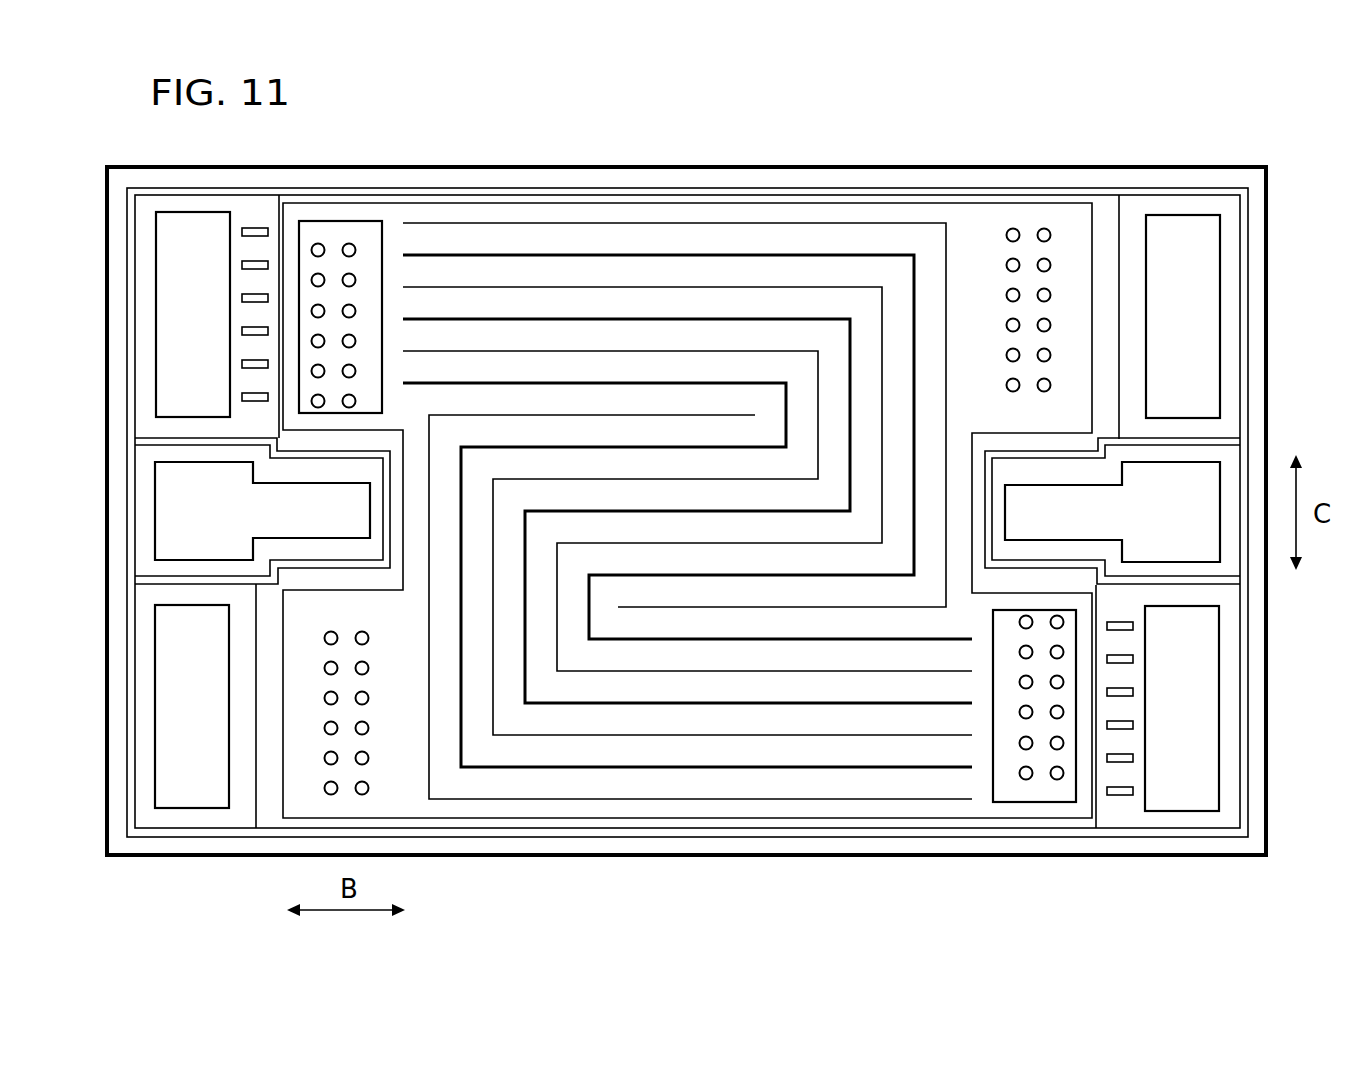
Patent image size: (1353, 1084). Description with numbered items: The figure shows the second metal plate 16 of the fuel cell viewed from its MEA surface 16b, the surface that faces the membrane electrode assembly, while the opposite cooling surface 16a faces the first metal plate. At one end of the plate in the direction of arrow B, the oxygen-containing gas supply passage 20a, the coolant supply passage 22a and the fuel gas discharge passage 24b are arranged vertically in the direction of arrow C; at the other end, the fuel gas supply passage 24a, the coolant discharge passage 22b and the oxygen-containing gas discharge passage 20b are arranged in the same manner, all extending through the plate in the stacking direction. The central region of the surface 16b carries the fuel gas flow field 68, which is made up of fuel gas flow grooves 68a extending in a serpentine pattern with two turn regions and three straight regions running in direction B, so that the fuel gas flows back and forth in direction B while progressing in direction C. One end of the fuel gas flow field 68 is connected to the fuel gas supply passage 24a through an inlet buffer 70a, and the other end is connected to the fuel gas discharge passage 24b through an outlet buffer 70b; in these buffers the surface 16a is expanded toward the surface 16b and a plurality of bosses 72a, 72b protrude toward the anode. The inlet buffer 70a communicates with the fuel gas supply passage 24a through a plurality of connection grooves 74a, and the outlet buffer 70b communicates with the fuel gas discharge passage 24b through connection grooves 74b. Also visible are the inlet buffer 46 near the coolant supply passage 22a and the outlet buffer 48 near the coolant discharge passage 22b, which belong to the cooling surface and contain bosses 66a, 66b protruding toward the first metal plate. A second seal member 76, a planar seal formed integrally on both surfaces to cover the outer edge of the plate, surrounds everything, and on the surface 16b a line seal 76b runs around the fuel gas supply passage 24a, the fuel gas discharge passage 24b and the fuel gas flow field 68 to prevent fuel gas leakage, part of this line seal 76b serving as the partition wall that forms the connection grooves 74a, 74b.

The second metal plate 16 is at (892, 124).
The surface (cooling surface) 16a is at (910, 845).
The surface (MEA surface) 16b is at (598, 848).
The oxygen-containing gas supply passage 20a is at (1183, 316).
The oxygen-containing gas discharge passage 20b is at (192, 706).
The coolant supply passage 22a is at (1112, 511).
The coolant discharge passage 22b is at (262, 511).
The fuel gas supply passage 24a is at (193, 314).
The fuel gas discharge passage 24b is at (1182, 708).
The inlet buffer 46 is at (1086, 387).
The outlet buffer 48 is at (290, 635).
The bosses 66a is at (1050, 266).
The bosses 66b is at (325, 758).
The fuel gas flow field 68 is at (689, 246).
The fuel gas flow grooves 68a is at (617, 287).
The inlet buffer (fuel gas buffer) 70a is at (333, 230).
The outlet buffer (fuel gas buffer) 70b is at (1041, 798).
The bosses 72a is at (312, 280).
The bosses 72b is at (1063, 743).
The connection grooves 74a is at (265, 385).
The connection grooves 74b is at (1122, 641).
The second seal member 76 is at (893, 185).
The line seal 76b is at (463, 192).